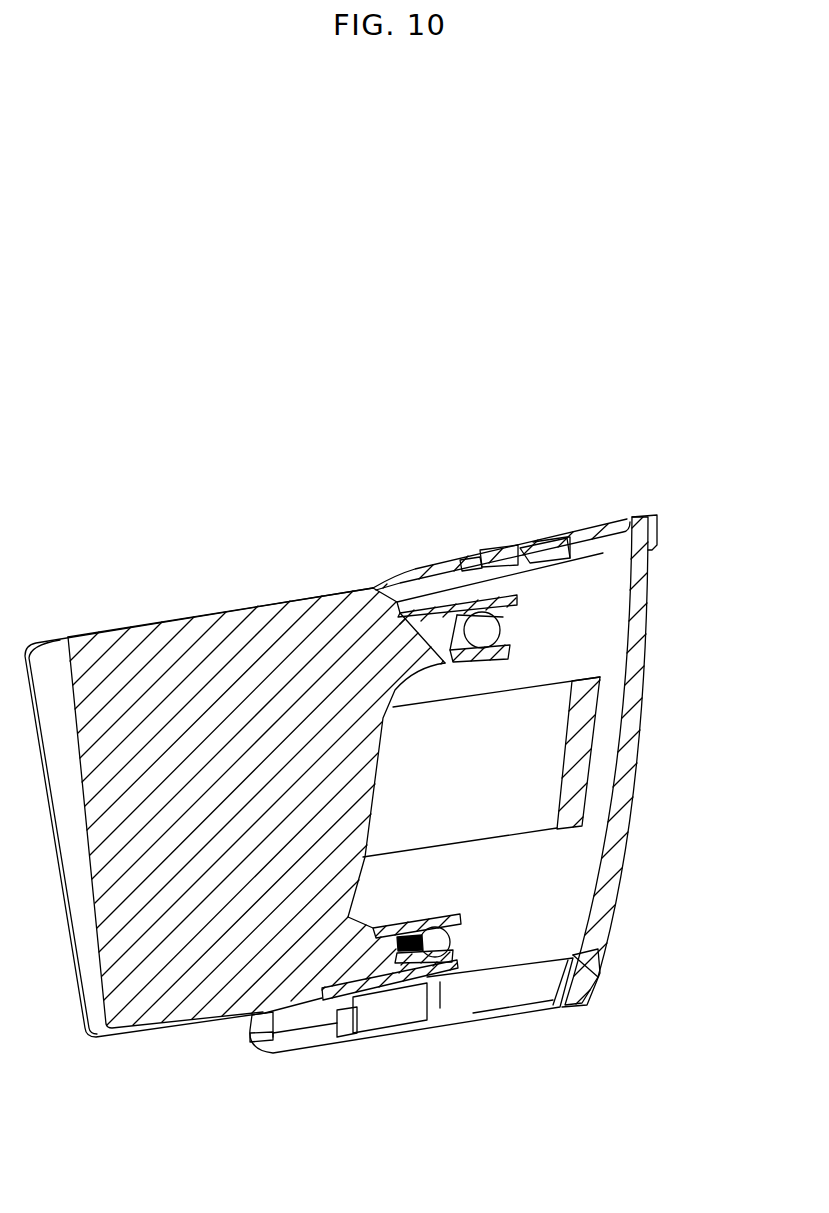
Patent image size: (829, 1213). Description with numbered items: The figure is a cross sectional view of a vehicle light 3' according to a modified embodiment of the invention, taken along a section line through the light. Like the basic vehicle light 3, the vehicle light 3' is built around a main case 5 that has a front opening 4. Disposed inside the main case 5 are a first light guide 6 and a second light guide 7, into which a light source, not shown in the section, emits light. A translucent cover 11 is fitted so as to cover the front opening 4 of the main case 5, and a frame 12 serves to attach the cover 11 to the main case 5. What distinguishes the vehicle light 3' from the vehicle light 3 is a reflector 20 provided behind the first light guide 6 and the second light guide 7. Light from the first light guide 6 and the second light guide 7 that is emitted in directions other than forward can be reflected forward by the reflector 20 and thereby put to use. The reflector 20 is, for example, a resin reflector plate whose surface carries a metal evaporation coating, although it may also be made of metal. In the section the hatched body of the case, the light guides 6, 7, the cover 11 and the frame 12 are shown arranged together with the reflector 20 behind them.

The vehicle light 3' is at (696, 468).
The vehicle light 3 is at (256, 749).
The main case 5 is at (172, 617).
The reflector 20 is at (380, 748).
The front opening 4 is at (623, 533).
The first light guide 6 is at (470, 620).
The second light guide 7 is at (591, 782).
The translucent cover 11 is at (618, 888).
The frame 12 is at (596, 977).